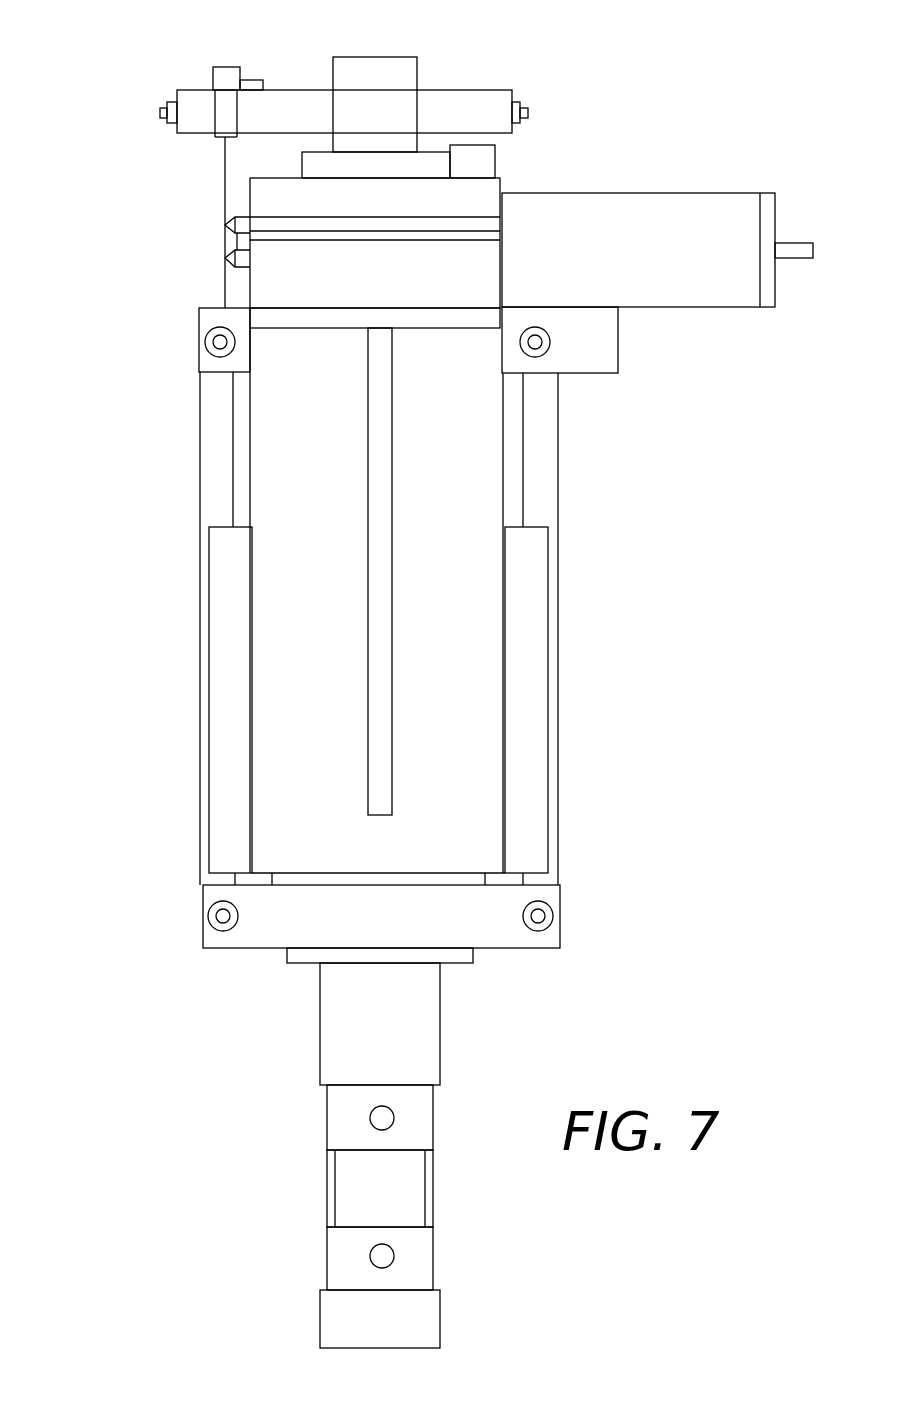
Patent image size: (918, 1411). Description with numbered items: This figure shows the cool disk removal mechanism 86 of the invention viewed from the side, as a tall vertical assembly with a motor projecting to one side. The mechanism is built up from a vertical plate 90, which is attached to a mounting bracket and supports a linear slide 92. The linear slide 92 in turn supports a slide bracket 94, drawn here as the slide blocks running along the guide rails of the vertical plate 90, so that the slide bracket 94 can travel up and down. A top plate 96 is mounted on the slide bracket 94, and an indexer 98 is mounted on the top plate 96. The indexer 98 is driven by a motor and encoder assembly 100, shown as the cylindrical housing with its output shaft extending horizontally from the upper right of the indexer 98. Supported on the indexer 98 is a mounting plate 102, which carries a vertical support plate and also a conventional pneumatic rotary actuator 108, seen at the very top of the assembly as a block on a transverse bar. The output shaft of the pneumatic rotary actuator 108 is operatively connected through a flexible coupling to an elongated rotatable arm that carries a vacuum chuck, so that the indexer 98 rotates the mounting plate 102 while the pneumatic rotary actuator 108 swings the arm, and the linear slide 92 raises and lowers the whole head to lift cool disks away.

The cool disk removal mechanism 86 is at (137, 397).
The vertical plate 90 is at (212, 491).
The linear slide 92 is at (230, 713).
The slide bracket 94 is at (268, 625).
The top plate 96 is at (270, 313).
The indexer 98 is at (382, 285).
The motor and encoder assembly 100 is at (655, 265).
The mounting plate 102 is at (302, 162).
The pneumatic rotary actuator 108 is at (398, 78).